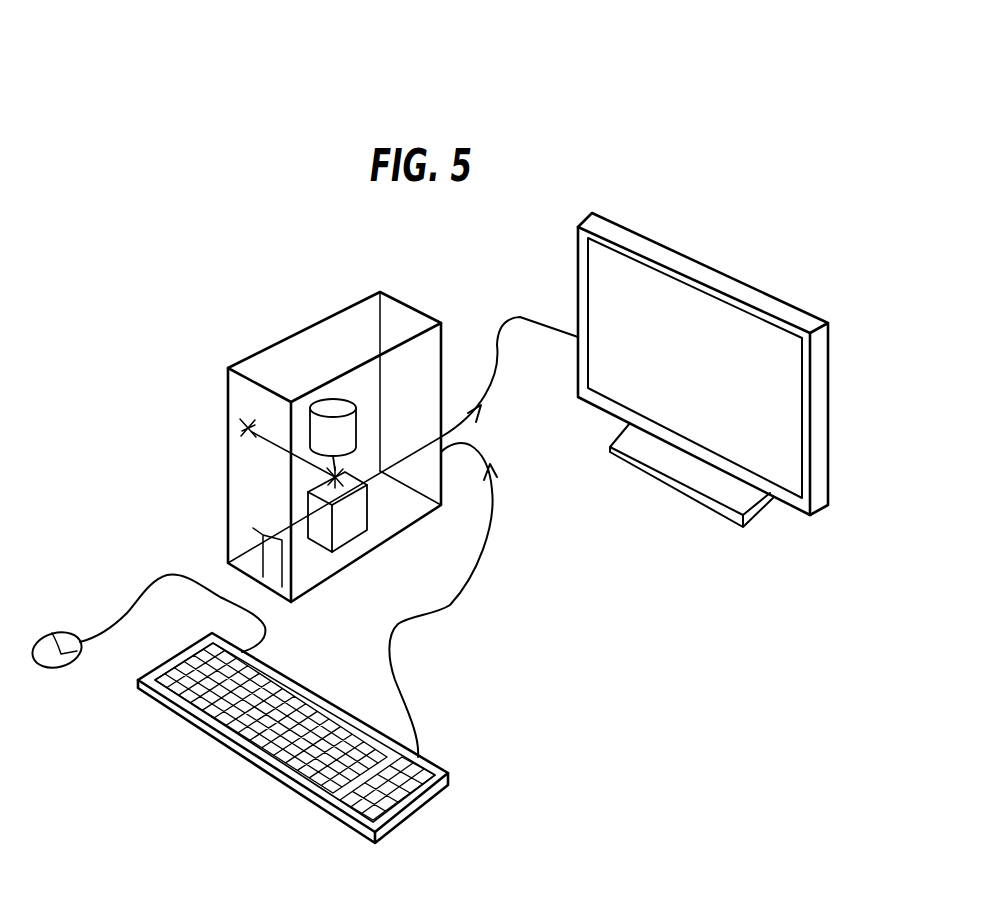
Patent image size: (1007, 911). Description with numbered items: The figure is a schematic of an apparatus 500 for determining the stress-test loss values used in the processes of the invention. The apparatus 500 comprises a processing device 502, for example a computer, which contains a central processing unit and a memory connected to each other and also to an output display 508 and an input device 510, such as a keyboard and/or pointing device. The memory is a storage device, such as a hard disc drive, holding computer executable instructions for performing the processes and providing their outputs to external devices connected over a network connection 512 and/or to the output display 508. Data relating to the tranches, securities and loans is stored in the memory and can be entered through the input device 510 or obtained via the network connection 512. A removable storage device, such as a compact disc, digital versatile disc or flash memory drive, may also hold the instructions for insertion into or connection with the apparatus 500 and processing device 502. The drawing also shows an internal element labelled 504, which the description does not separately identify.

The apparatus 500 is at (614, 126).
The processing device 502 is at (310, 415).
The processor 504 is at (355, 518).
The output display 508 is at (712, 267).
The input device 510 is at (267, 770).
The network connection 512 is at (267, 438).